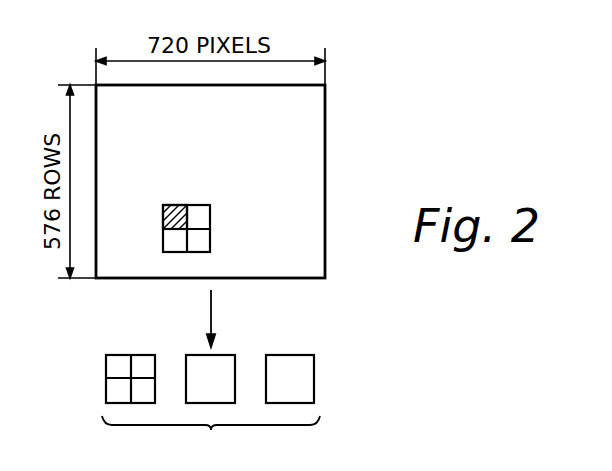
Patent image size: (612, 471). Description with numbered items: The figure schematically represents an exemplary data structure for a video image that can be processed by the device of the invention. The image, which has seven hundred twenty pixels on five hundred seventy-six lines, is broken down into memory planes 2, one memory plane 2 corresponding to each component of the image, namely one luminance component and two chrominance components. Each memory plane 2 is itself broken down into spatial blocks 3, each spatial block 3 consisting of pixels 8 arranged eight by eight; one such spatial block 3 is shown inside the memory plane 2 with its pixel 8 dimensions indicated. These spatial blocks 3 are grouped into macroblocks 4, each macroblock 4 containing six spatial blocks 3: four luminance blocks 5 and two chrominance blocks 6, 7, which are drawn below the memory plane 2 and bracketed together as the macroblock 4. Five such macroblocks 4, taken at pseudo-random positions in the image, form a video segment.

The memory plane 2 is at (325, 218).
The spatial block 3 is at (222, 201).
The macroblock 4 is at (211, 440).
The luminance block 5 is at (121, 352).
The chrominance block 6 is at (230, 352).
The chrominance block 7 is at (299, 352).
The pixel 8 is at (164, 203).